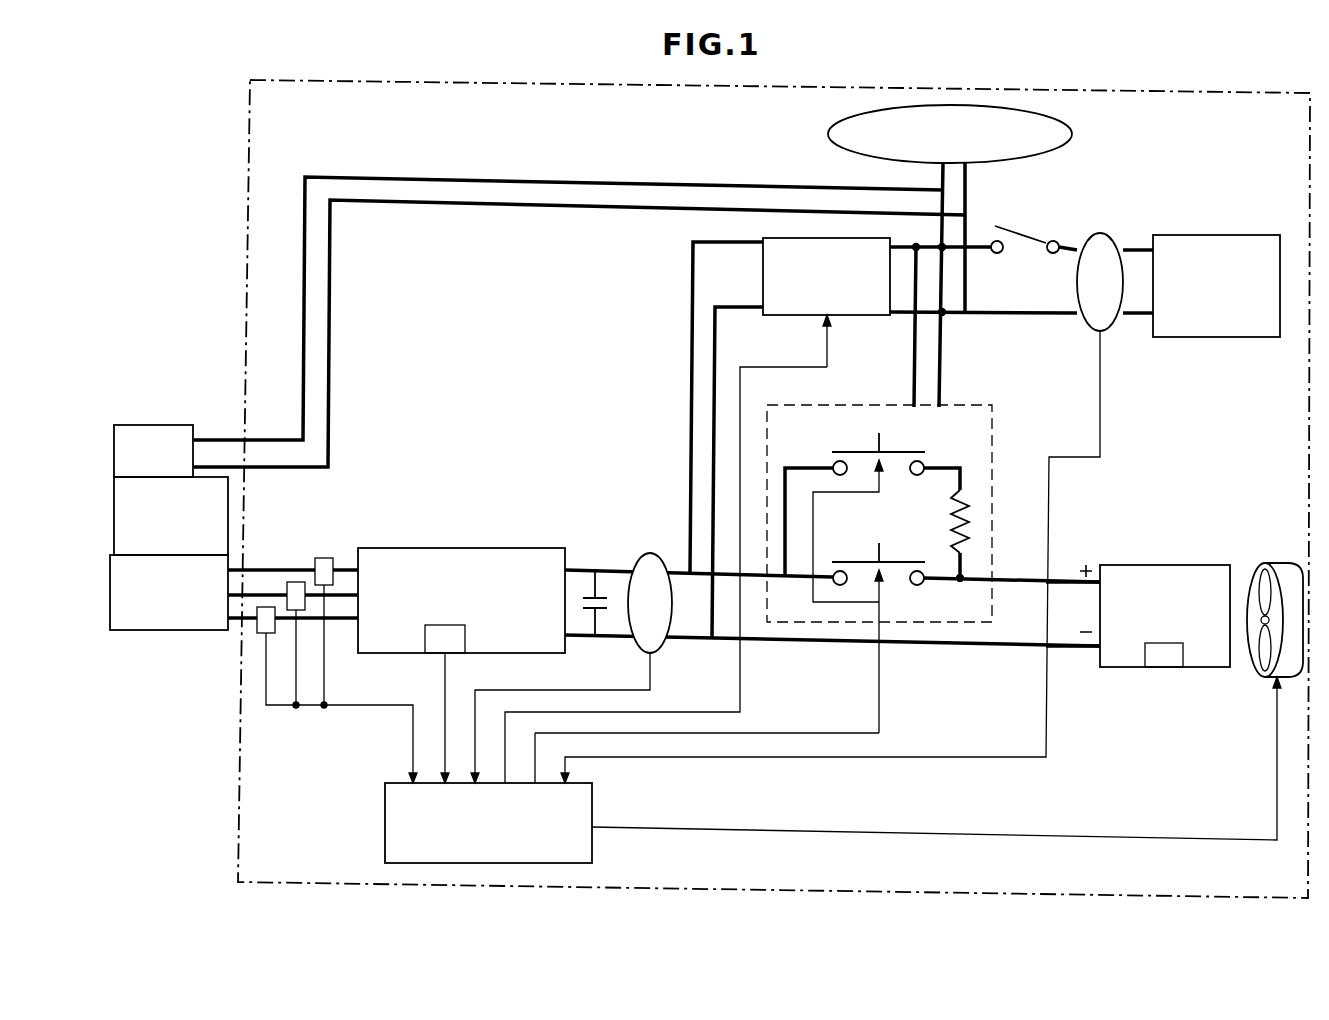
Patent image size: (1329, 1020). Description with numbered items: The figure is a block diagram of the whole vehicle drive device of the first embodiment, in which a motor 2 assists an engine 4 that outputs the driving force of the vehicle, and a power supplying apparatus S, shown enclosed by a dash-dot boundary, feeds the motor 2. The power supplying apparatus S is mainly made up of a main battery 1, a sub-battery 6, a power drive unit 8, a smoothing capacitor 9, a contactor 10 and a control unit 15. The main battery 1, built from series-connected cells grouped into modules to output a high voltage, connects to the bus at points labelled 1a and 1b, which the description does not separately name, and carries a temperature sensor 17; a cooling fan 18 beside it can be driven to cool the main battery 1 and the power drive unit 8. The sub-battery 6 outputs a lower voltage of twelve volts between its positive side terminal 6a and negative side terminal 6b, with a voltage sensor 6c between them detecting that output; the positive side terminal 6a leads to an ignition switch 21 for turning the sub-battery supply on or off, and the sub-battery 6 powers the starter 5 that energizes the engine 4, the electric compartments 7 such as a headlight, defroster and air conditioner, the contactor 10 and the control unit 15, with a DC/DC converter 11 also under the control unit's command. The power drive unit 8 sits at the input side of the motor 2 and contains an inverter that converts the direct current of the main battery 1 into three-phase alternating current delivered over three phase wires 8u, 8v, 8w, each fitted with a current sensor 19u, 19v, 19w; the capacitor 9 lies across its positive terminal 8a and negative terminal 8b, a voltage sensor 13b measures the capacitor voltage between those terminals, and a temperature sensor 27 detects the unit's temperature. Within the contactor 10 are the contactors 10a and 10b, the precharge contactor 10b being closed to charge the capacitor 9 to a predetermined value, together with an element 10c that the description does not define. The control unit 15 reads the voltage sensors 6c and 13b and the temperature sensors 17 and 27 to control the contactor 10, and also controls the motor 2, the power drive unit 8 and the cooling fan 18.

The power supplying apparatus S is at (248, 210).
The main battery 1 is at (1192, 565).
The positive terminal of main battery 1a is at (1058, 582).
The negative terminal of main battery 1b is at (1058, 646).
The motor 2 is at (180, 630).
The engine 4 is at (228, 505).
The starter 5 is at (172, 425).
The sub-battery 6 is at (1238, 235).
The positive side terminal 6a is at (1133, 250).
The negative side terminal 6b is at (1133, 316).
The voltage sensor 6c is at (1099, 233).
The electric compartments 7 is at (1075, 135).
The power drive unit 8 is at (487, 548).
The positive terminal 8a is at (578, 570).
The negative terminal 8b is at (578, 636).
The phase wire 8u is at (341, 572).
The phase wire 8v is at (342, 600).
The phase wire 8w is at (347, 622).
The smoothing capacitor 9 is at (601, 597).
The contactor 10 is at (785, 580).
The contactor 10a is at (900, 556).
The precharge contactor 10b is at (900, 446).
The precharge resistor 10c is at (970, 516).
The DC/DC converter 11 is at (853, 316).
The voltage sensor 13b is at (641, 553).
The control unit 15 is at (594, 813).
The temperature sensor 17 is at (1165, 655).
The cooling fan 18 is at (1277, 562).
The current sensor 19u is at (325, 556).
The current sensor 19v is at (297, 580).
The current sensor 19w is at (264, 605).
The ignition switch 21 is at (1031, 226).
The temperature sensor 27 is at (452, 640).